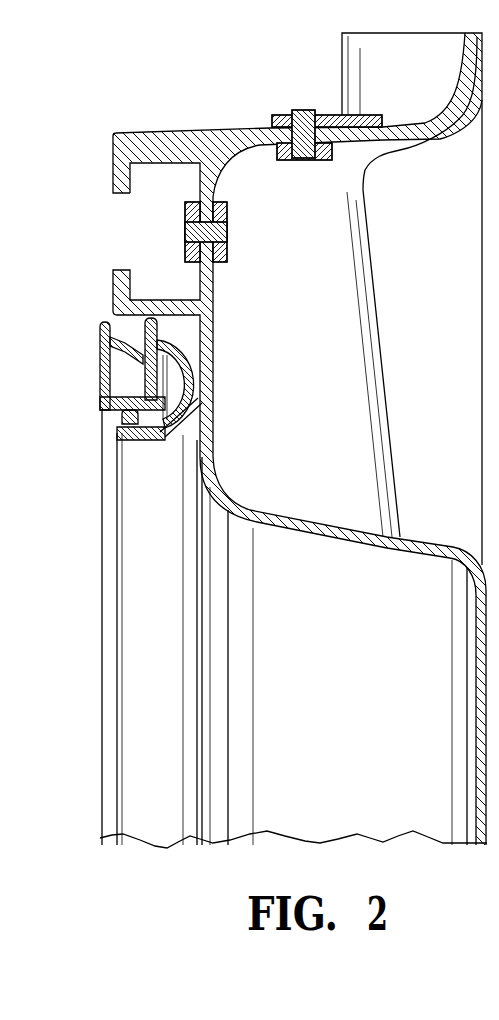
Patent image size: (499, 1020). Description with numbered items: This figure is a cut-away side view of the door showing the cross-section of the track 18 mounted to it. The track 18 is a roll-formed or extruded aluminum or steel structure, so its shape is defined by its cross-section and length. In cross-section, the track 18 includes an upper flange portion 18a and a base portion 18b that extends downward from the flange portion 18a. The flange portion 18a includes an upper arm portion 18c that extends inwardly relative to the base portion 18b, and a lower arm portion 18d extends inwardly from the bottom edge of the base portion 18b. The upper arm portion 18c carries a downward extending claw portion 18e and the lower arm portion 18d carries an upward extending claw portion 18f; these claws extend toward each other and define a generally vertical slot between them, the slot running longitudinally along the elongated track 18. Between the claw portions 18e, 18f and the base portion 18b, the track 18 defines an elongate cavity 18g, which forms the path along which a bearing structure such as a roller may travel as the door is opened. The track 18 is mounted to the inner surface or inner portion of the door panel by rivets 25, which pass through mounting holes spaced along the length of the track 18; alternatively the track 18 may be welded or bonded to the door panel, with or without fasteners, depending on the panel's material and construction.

The track 18 is at (173, 124).
The upper flange portion 18a is at (208, 129).
The base portion 18b is at (187, 278).
The upper arm portion 18c is at (135, 133).
The lower arm portion 18d is at (130, 322).
The downward extending claw portion 18e is at (112, 185).
The upward extending claw portion 18f is at (112, 287).
The elongate cavity 18g is at (155, 229).
The rivets 25 is at (296, 162).